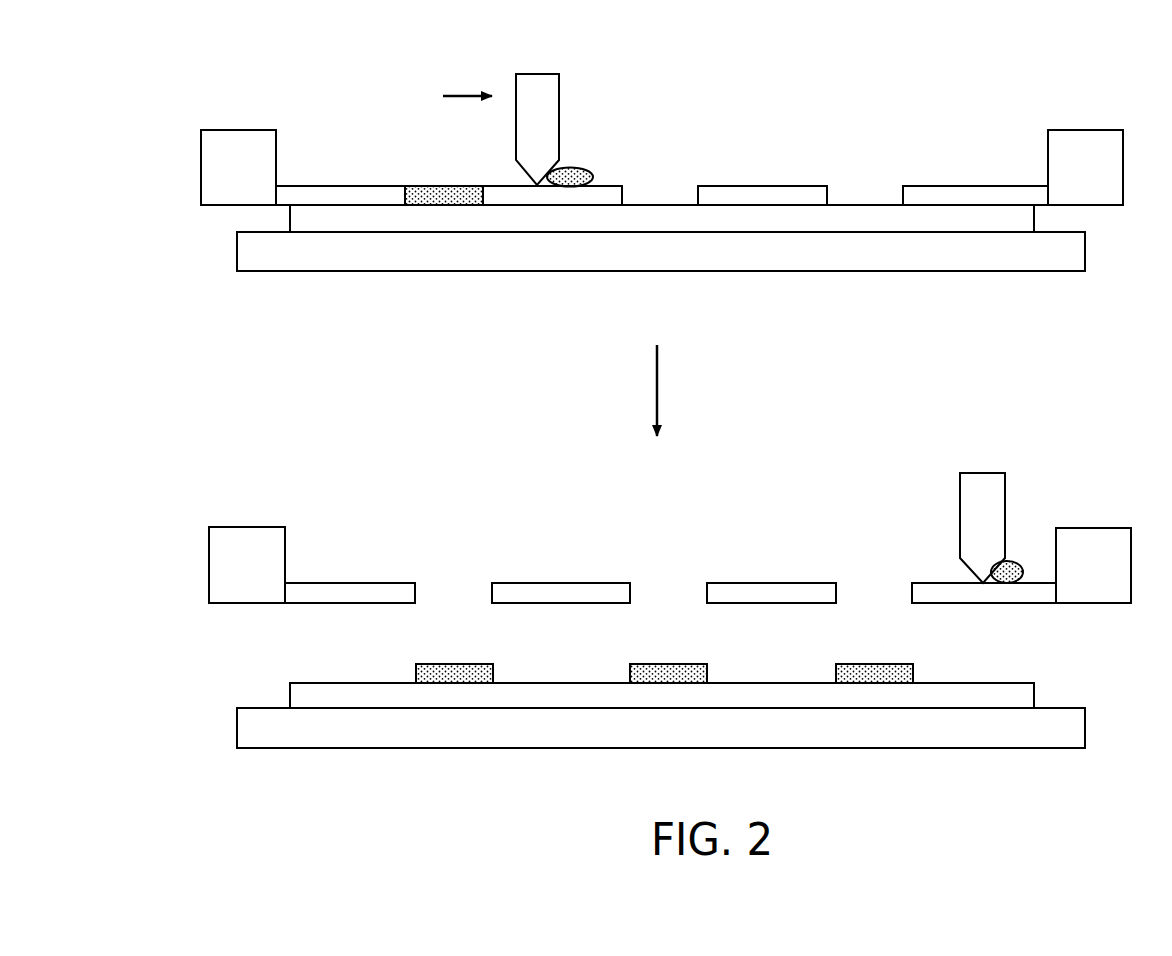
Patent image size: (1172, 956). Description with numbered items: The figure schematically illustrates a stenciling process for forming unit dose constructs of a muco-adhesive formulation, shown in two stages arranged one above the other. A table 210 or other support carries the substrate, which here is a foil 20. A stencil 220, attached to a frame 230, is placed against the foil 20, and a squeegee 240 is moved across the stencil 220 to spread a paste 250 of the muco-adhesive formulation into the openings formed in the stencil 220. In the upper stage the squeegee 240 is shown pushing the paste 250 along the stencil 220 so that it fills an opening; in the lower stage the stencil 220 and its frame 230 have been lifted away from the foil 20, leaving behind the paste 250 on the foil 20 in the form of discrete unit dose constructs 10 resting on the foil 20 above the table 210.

The unit dose constructs 10 is at (462, 672).
The foil 20 is at (1036, 218).
The table 210 is at (1070, 252).
The stencil 220 is at (995, 195).
The frame 230 is at (1095, 148).
The squeegee 240 is at (535, 82).
The paste 250 is at (428, 174).